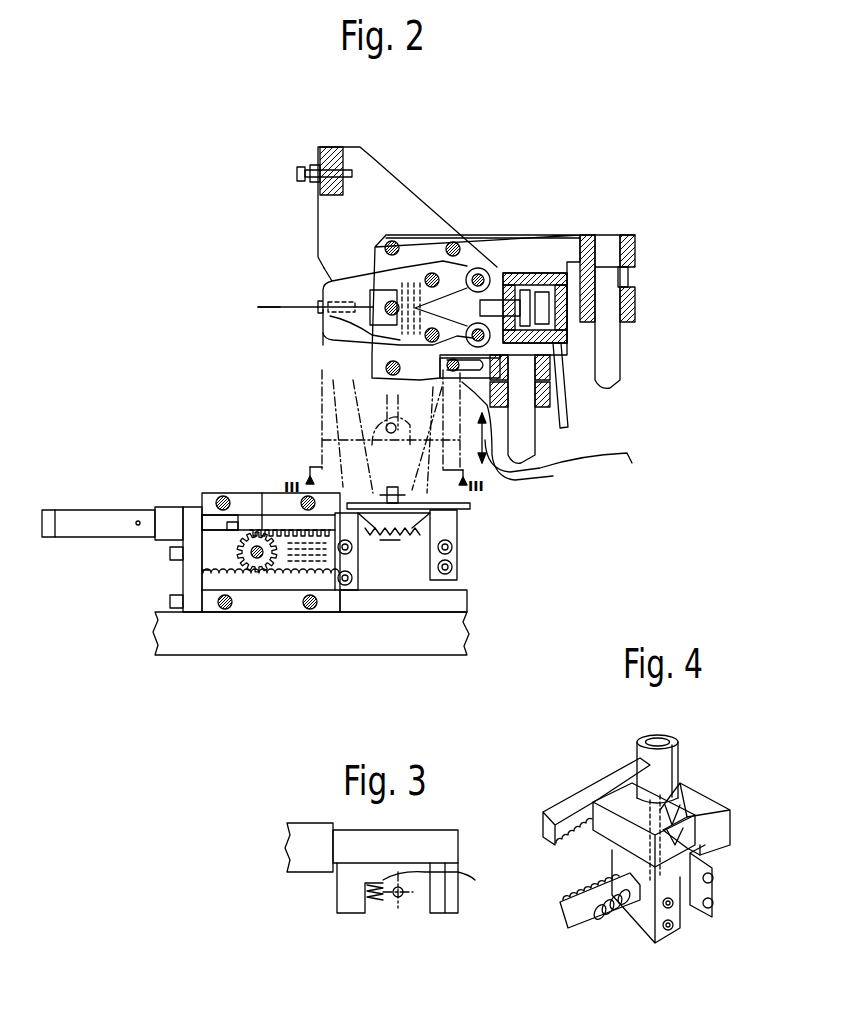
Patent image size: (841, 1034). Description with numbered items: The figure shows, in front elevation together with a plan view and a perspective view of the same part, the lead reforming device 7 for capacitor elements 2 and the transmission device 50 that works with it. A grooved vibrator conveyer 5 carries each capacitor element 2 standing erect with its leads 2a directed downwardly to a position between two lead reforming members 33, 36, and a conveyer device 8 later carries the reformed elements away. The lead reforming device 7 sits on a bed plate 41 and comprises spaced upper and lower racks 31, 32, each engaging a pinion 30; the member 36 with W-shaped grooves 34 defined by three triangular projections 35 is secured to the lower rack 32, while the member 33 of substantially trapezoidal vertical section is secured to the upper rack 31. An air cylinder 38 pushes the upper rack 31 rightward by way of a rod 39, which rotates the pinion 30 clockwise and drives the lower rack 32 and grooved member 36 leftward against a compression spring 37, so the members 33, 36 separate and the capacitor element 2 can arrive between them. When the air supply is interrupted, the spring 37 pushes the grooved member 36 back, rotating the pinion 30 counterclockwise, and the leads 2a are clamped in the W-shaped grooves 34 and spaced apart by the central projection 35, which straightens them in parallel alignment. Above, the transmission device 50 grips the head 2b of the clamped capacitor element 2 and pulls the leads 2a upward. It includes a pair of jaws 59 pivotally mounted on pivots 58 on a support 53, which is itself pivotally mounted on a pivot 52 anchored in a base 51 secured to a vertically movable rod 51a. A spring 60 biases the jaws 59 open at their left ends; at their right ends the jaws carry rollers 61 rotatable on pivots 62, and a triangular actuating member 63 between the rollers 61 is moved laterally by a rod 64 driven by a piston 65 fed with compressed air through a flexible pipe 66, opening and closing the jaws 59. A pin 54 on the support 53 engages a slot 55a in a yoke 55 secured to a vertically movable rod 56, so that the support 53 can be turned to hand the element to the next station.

In FIG. 2, the capacitor element 2 is at (346, 299).
In FIG. 3, the capacitor element 2 is at (400, 900).
In FIG. 4, the capacitor element 2 is at (680, 735).
In FIG. 2, the leads 2a is at (278, 306).
In FIG. 4, the leads 2a is at (700, 858).
In FIG. 2, the head 2b is at (318, 307).
In FIG. 4, the head 2b is at (680, 765).
In FIG. 2, the grooved vibrator conveyer 5 is at (395, 548).
In FIG. 2, the lead reforming device 7 is at (465, 529).
In FIG. 3, the lead reforming device 7 is at (462, 851).
In FIG. 4, the lead reforming device 7 is at (608, 765).
In FIG. 2, the conveyer device 8 is at (296, 199).
In FIG. 2, the pinion 30 is at (257, 508).
In FIG. 2, the upper rack 31 is at (275, 493).
In FIG. 4, the upper rack 31 is at (570, 848).
In FIG. 2, the lower rack 32 is at (205, 557).
In FIG. 4, the lower rack 32 is at (575, 880).
In FIG. 2, the lead reforming member 33 is at (540, 532).
In FIG. 3, the lead reforming member 33 is at (458, 913).
In FIG. 4, the lead reforming member 33 is at (690, 800).
In FIG. 3, the W-shaped grooves 34 is at (388, 900).
In FIG. 4, the W-shaped grooves 34 is at (690, 788).
In FIG. 2, the triangular projections 35 is at (443, 545).
In FIG. 3, the triangular projections 35 is at (465, 872).
In FIG. 4, the triangular projections 35 is at (700, 818).
In FIG. 2, the grooved member 36 is at (375, 522).
In FIG. 3, the grooved member 36 is at (352, 897).
In FIG. 4, the grooved member 36 is at (608, 805).
In FIG. 2, the compression spring 37 is at (262, 575).
In FIG. 4, the compression spring 37 is at (600, 920).
In FIG. 2, the air cylinder 38 is at (82, 510).
In FIG. 2, the rod 39 is at (207, 497).
In FIG. 2, the bed plate 41 is at (468, 612).
In FIG. 2, the transmission device 50 is at (525, 222).
In FIG. 2, the base 51 is at (377, 148).
In FIG. 2, the rod 51a is at (620, 368).
In FIG. 2, the pivot 52 is at (357, 280).
In FIG. 2, the support 53 is at (440, 230).
In FIG. 2, the pin 54 is at (513, 424).
In FIG. 2, the yoke 55 is at (566, 466).
In FIG. 2, the slot 55a is at (330, 380).
In FIG. 2, the rod 56 is at (560, 437).
In FIG. 2, the pivots 58 is at (465, 270).
In FIG. 2, the jaws 59 is at (348, 283).
In FIG. 2, the spring 60 is at (375, 358).
In FIG. 2, the rollers 61 is at (540, 267).
In FIG. 2, the pivots 62 is at (527, 267).
In FIG. 2, the actuating member 63 is at (373, 362).
In FIG. 2, the rod 64 is at (587, 258).
In FIG. 2, the piston 65 is at (632, 252).
In FIG. 2, the flexible pipe 66 is at (607, 420).